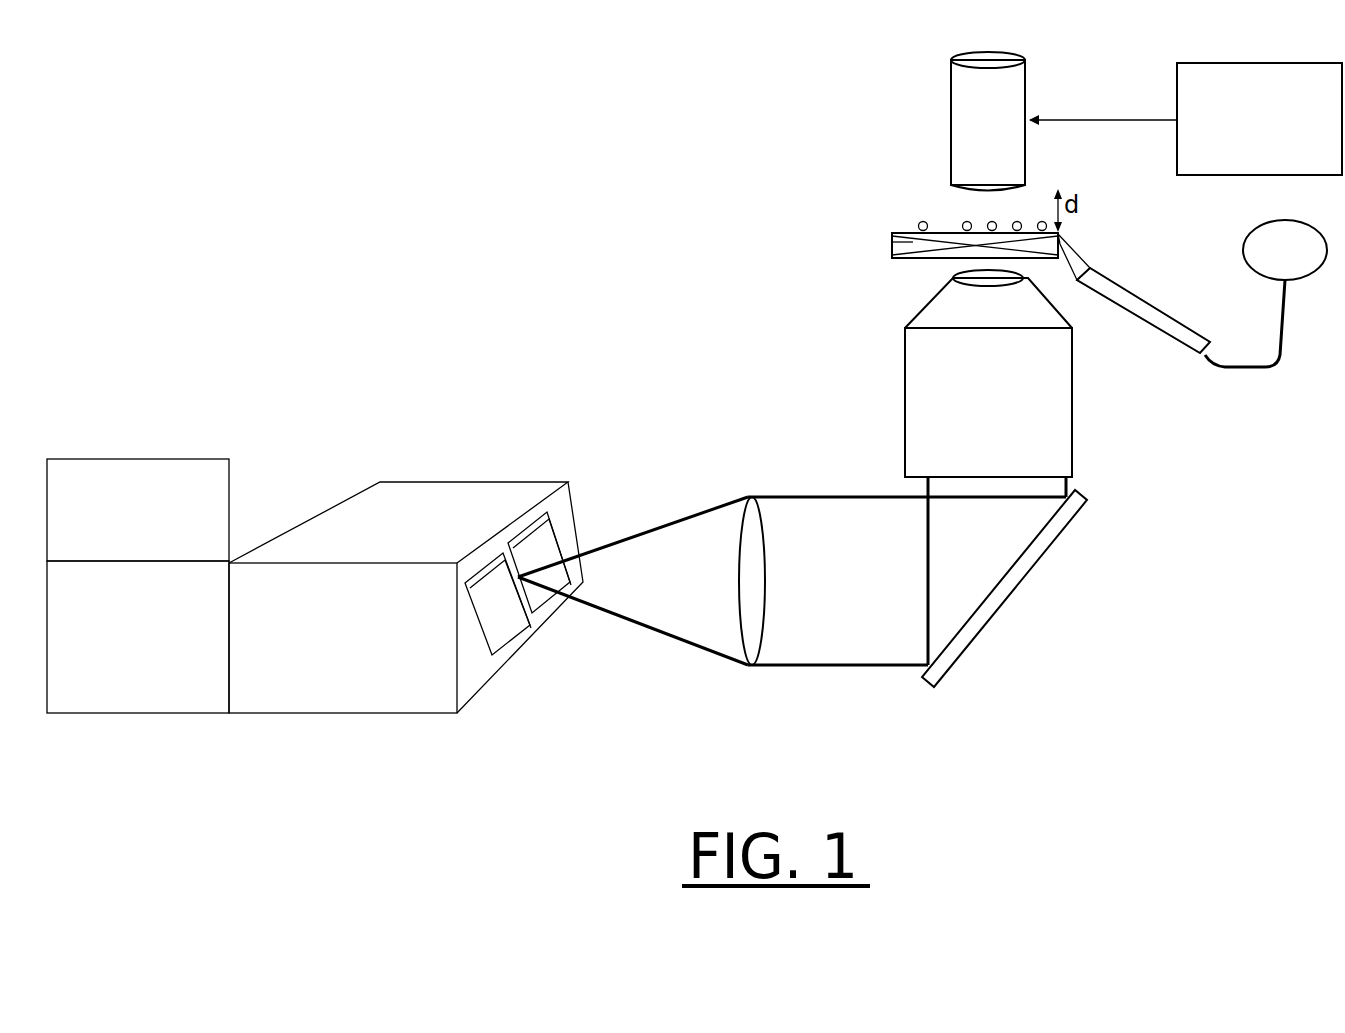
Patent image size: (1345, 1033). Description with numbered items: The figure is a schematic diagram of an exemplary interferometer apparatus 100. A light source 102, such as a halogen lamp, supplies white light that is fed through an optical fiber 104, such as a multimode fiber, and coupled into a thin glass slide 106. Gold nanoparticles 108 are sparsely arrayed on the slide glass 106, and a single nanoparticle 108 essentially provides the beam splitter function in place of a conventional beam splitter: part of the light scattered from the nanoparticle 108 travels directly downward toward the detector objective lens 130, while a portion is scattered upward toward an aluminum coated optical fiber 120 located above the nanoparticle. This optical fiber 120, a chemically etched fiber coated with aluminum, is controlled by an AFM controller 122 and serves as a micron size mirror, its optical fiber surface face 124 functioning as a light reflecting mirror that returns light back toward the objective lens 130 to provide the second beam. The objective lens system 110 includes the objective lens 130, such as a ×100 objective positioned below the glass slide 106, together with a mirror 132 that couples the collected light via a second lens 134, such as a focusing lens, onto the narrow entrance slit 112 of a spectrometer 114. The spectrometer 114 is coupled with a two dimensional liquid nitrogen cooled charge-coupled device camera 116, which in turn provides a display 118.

The interferometer apparatus 100 is at (518, 148).
The light source 102 is at (1266, 293).
The optical fiber 104 is at (1138, 322).
The glass slide 106 is at (892, 243).
The gold nanoparticle 108 is at (990, 221).
The objective lens system 110 is at (697, 408).
The entrance slit 112 is at (533, 623).
The spectrometer 114 is at (406, 597).
The LN-CCD camera 116 is at (138, 637).
The display 118 is at (138, 510).
The optical fiber 120 is at (968, 118).
The AFM controller 122 is at (1186, 119).
The optical fiber surface face 124 is at (1025, 185).
The objective lens 130 is at (988, 373).
The mirror 132 is at (1087, 640).
The second lens 134 is at (760, 640).